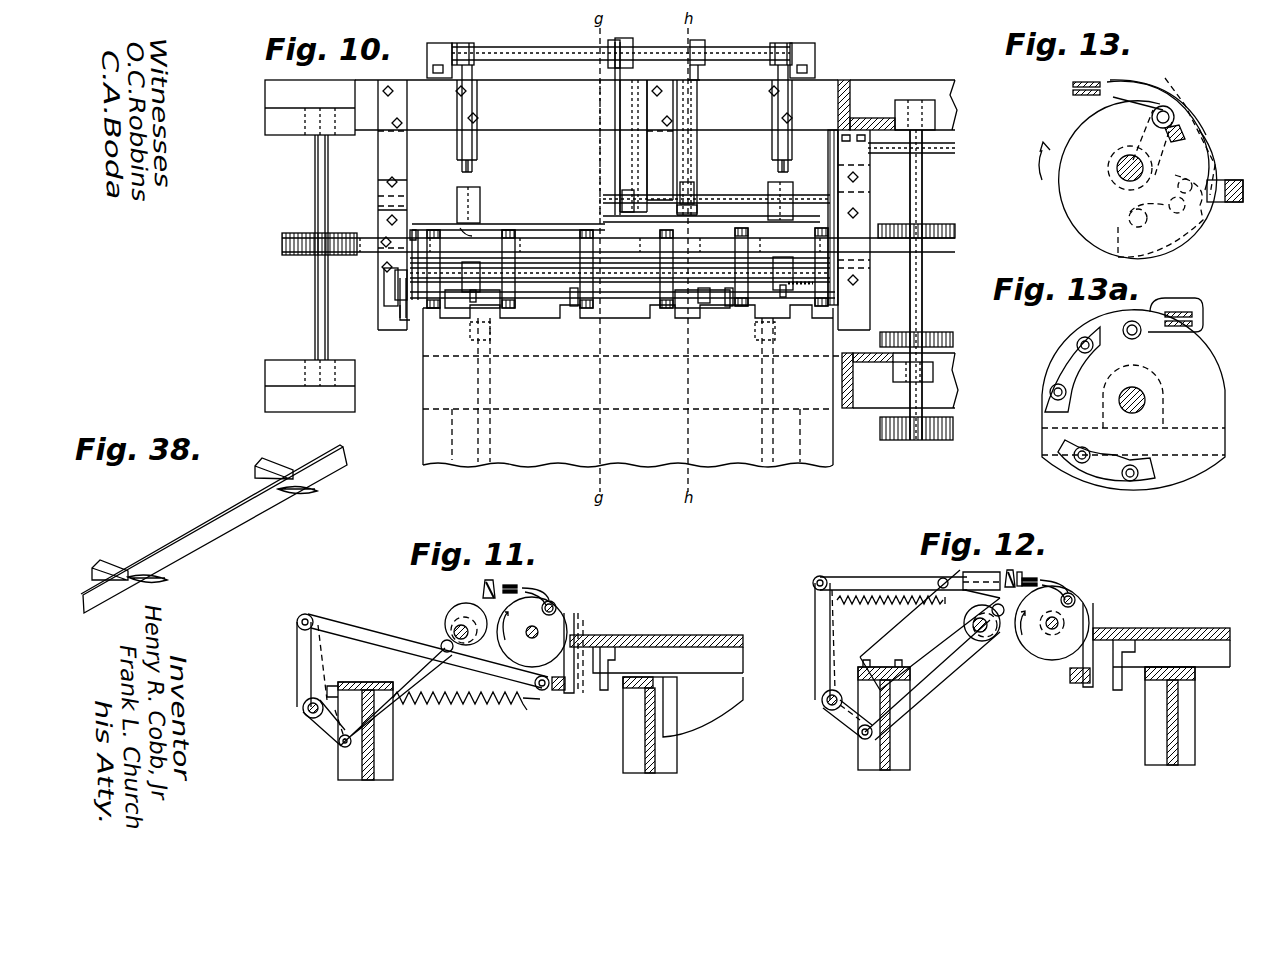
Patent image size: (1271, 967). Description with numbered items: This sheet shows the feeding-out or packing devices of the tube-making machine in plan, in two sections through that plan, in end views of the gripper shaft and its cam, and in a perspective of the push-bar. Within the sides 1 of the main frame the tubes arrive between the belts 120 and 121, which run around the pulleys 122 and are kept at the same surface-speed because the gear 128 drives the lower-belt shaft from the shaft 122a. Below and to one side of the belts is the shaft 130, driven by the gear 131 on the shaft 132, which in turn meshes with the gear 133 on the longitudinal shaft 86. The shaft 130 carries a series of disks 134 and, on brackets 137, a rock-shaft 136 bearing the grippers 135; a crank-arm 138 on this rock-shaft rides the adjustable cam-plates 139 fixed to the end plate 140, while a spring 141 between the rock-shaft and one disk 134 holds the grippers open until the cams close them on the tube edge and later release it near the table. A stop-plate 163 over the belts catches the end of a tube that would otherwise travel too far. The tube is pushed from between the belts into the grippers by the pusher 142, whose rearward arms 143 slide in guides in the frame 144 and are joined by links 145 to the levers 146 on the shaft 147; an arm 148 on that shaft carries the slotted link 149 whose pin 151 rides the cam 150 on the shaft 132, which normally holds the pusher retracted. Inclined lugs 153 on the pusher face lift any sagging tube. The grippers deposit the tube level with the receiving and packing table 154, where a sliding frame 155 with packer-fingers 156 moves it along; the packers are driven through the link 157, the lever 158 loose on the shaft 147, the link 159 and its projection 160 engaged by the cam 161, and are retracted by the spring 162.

In FIG. 10, the sides of main frame 1 is at (905, 92).
In FIG. 10, the longitudinally-extending shaft 86 is at (940, 140).
In FIG. 10, the belt 120 is at (555, 250).
In FIG. 13, the belt 120 is at (1080, 82).
In FIG. 13A, the belt 120 is at (1173, 312).
In FIG. 11, the belt 120 is at (515, 585).
In FIG. 12, the belt 120 is at (1030, 578).
In FIG. 13, the belt 121 is at (1073, 92).
In FIG. 10, the pulleys 122 is at (955, 230).
In FIG. 10, the shaft 122a is at (922, 187).
In FIG. 10, the gear 128 is at (930, 333).
In FIG. 10, the shaft 130 is at (560, 272).
In FIG. 13, the shaft 130 is at (1118, 170).
In FIG. 13A, the shaft 130 is at (1146, 401).
In FIG. 11, the shaft 130 is at (533, 636).
In FIG. 12, the shaft 130 is at (1052, 630).
In FIG. 10, the gear 131 is at (838, 178).
In FIG. 10, the shaft 132 is at (738, 195).
In FIG. 11, the shaft 132 is at (465, 637).
In FIG. 12, the shaft 132 is at (978, 633).
In FIG. 10, the gear 133 is at (828, 147).
In FIG. 10, the disks 134 is at (432, 318).
In FIG. 13, the disks 134 is at (1138, 178).
In FIG. 13, the grippers 135 is at (1135, 82).
In FIG. 12, the grippers 135 is at (1060, 582).
In FIG. 10, the rock-shaft 136 is at (705, 298).
In FIG. 13, the rock-shaft 136 is at (1170, 112).
In FIG. 11, the rock-shaft 136 is at (552, 606).
In FIG. 12, the rock-shaft 136 is at (1075, 600).
In FIG. 10, the brackets 137 is at (470, 298).
In FIG. 10, the crank-arm 138 is at (403, 318).
In FIG. 13, the crank-arm 138 is at (1182, 132).
In FIG. 10, the cam-plates 139 is at (400, 315).
In FIG. 13, the cam-plates 139 is at (1170, 245).
In FIG. 13A, the cam-plates 139 is at (1060, 364).
In FIG. 10, the end plate or casting 140 is at (395, 290).
In FIG. 13A, the end plate or casting 140 is at (1133, 400).
In FIG. 10, the spring 141 is at (795, 286).
In FIG. 10, the pusher 142 is at (508, 220).
In FIG. 38, the pusher 142 is at (212, 533).
In FIG. 11, the pusher 142 is at (490, 582).
In FIG. 12, the pusher 142 is at (1005, 572).
In FIG. 10, the rearward arms 143 is at (475, 178).
In FIG. 38, the rearward arms 143 is at (272, 462).
In FIG. 12, the rearward arms 143 is at (953, 578).
In FIG. 10, the frame 144 is at (462, 158).
In FIG. 12, the frame 144 is at (965, 630).
In FIG. 10, the links 145 is at (470, 146).
In FIG. 12, the links 145 is at (890, 578).
In FIG. 10, the levers 146 is at (462, 43).
In FIG. 12, the levers 146 is at (820, 656).
In FIG. 10, the shaft 147 is at (548, 50).
In FIG. 11, the shaft 147 is at (302, 710).
In FIG. 12, the shaft 147 is at (822, 698).
In FIG. 12, the arm 148 is at (845, 720).
In FIG. 10, the link 149 is at (690, 158).
In FIG. 12, the link 149 is at (918, 690).
In FIG. 10, the cam 150 is at (690, 190).
In FIG. 12, the cam 150 is at (985, 640).
In FIG. 10, the pin 151 is at (692, 210).
In FIG. 12, the pin 151 is at (880, 605).
In FIG. 10, the lugs 153 is at (468, 236).
In FIG. 38, the lugs 153 is at (300, 491).
In FIG. 10, the receiving and packing table 154 is at (632, 386).
In FIG. 13, the receiving and packing table 154 is at (1235, 185).
In FIG. 11, the receiving and packing table 154 is at (695, 634).
In FIG. 12, the receiving and packing table 154 is at (1145, 630).
In FIG. 10, the sliding frame 155 is at (622, 295).
In FIG. 11, the sliding frame 155 is at (558, 692).
In FIG. 10, the packer-fingers 156 is at (575, 300).
In FIG. 11, the packer-fingers 156 is at (575, 620).
In FIG. 12, the packer-fingers 156 is at (1093, 620).
In FIG. 10, the link 157 is at (615, 106).
In FIG. 11, the link 157 is at (378, 636).
In FIG. 10, the lever 158 is at (620, 42).
In FIG. 11, the lever 158 is at (298, 676).
In FIG. 10, the link 159 is at (625, 157).
In FIG. 11, the link 159 is at (380, 713).
In FIG. 11, the projection 160 is at (440, 645).
In FIG. 10, the cam 161 is at (638, 214).
In FIG. 11, the cam 161 is at (460, 618).
In FIG. 11, the spring 162 is at (483, 703).
In FIG. 10, the stop-plate 163 is at (412, 265).
In FIG. 13A, the stop-plate 163 is at (1200, 305).